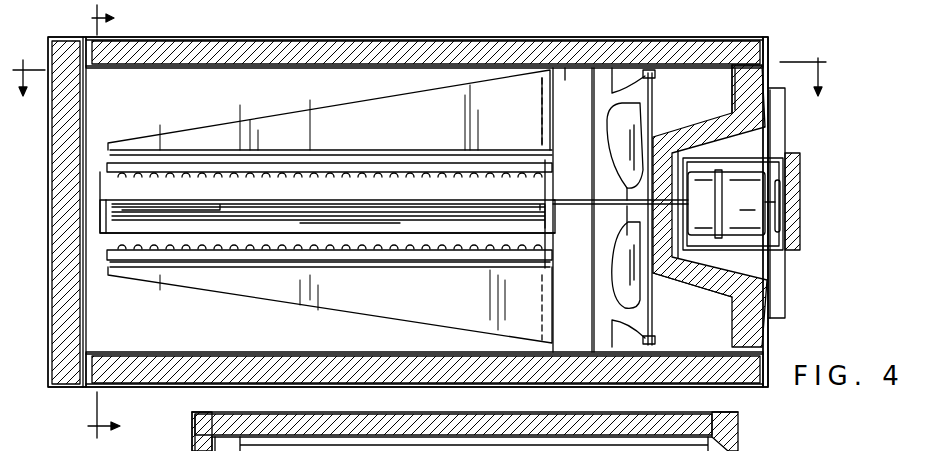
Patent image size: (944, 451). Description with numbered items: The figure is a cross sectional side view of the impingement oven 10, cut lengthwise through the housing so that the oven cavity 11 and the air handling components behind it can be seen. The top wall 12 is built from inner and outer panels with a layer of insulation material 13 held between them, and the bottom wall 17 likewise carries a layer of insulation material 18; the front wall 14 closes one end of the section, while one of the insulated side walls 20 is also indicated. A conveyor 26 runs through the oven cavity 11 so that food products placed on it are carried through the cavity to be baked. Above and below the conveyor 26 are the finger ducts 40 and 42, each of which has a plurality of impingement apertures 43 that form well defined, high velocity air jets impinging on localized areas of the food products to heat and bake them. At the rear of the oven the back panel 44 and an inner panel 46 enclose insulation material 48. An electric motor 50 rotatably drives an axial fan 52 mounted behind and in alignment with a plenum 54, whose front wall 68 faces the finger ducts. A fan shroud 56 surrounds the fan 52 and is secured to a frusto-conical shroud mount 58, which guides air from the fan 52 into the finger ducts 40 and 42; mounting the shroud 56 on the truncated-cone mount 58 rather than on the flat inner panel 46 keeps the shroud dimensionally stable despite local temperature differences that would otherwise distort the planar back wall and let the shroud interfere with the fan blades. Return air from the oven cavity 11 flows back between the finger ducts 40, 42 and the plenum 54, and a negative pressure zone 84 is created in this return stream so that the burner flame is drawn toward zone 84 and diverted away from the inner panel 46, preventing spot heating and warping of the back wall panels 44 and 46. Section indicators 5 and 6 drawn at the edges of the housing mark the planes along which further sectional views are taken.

The impingement oven 10 is at (290, 34).
The oven cavity 11 is at (155, 114).
The top wall 12 is at (227, 46).
The insulation material 13 is at (169, 46).
The front wall 14 is at (48, 218).
The bottom wall 17 is at (735, 381).
The insulation material 18 is at (237, 352).
The side wall 20 is at (737, 448).
The conveyor 26 is at (126, 193).
The finger duct 40 is at (428, 135).
The finger duct 42 is at (425, 304).
The impingement apertures 43 is at (245, 180).
The back panel 44 is at (765, 63).
The inner panel 46 is at (730, 81).
The insulation material 48 is at (742, 86).
The electric motor 50 is at (755, 185).
The axial fan 52 is at (622, 268).
The plenum 54 is at (565, 78).
The fan shroud 56 is at (624, 103).
The frusto-conical shroud mount 58 is at (712, 285).
The front wall of plenum 68 is at (545, 115).
The negative pressure zone 84 is at (711, 336).
The section line 5- 5 is at (113, 223).
The section line 6- 6 is at (419, 88).